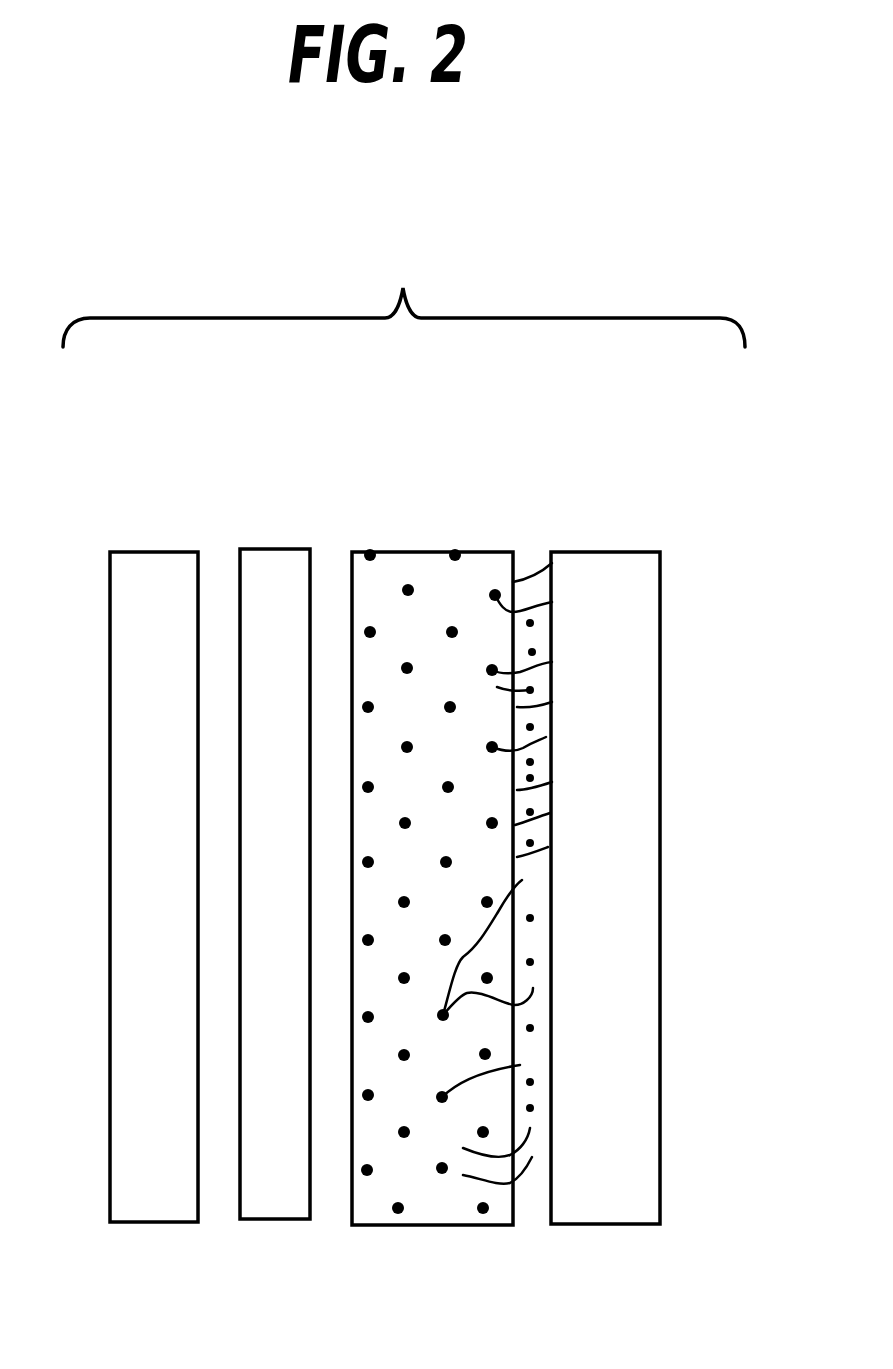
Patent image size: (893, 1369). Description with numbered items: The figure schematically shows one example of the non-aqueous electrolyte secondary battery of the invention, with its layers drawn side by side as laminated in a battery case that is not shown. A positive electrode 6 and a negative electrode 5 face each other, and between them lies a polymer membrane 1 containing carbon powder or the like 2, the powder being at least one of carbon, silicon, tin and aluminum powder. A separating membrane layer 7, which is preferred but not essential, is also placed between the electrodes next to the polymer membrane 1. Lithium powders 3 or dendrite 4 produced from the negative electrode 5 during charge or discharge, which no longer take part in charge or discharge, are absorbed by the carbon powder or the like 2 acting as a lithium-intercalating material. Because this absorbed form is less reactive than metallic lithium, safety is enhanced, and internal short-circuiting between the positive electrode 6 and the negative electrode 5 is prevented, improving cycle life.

The polymer membrane 1 is at (408, 566).
The carbon powder or the like 2 is at (440, 1177).
The lithium powders 3 is at (535, 651).
The dendrite 4 is at (517, 588).
The negative electrode 5 is at (613, 570).
The positive electrode 6 is at (157, 565).
The separating membrane layer 7 is at (280, 566).